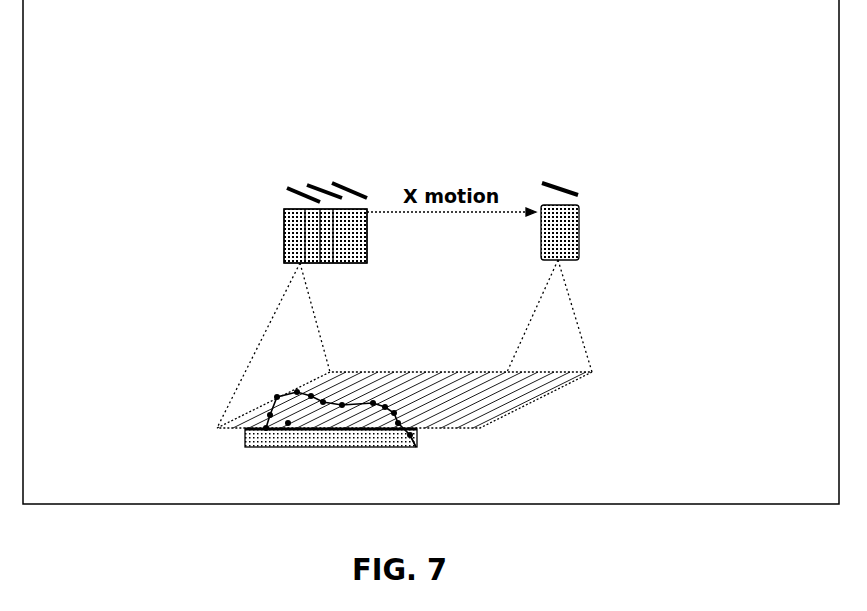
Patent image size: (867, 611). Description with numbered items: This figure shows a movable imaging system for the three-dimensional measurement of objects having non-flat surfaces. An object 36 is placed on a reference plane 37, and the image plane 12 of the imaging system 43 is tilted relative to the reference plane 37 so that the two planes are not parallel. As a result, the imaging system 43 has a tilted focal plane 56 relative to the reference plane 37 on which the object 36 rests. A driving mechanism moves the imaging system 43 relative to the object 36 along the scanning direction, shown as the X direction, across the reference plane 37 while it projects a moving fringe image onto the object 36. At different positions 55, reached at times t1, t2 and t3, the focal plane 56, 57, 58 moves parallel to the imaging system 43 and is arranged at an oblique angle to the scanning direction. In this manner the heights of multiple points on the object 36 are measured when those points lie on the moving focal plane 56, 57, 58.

The image plane 12 is at (283, 198).
The imaging system 43 is at (268, 239).
The positions 55 is at (276, 173).
The focal plane 56 is at (253, 408).
The focal plane 57 is at (318, 385).
The focal plane 58 is at (372, 373).
The object 36 is at (262, 430).
The reference plane 37 is at (416, 447).